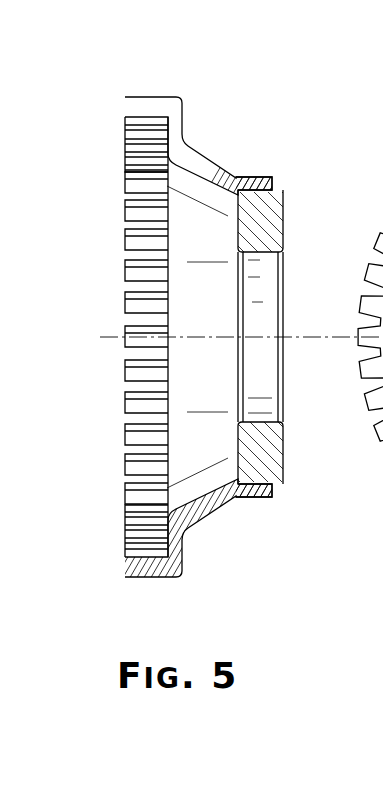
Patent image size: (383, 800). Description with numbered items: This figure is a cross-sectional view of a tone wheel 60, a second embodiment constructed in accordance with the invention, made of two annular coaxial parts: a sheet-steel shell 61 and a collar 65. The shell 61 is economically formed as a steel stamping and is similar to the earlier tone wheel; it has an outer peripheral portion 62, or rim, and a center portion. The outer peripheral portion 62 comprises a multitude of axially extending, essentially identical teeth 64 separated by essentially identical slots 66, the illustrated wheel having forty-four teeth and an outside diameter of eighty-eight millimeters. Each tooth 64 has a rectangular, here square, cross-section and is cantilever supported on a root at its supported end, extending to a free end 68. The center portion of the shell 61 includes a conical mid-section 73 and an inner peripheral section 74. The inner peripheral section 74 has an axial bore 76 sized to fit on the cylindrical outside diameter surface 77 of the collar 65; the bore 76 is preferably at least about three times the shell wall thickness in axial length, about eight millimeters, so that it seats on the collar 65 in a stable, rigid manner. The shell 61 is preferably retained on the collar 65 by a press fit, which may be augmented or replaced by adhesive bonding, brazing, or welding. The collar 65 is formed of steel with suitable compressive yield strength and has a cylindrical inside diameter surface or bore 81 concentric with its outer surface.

The tone wheel 60 is at (129, 81).
The shell part 61 is at (205, 152).
The outer peripheral portion 62 is at (122, 105).
The teeth 64 is at (137, 407).
The collar 65 is at (289, 457).
The slots 66 is at (137, 502).
The free end 68 is at (125, 268).
The conical mid-section 73 is at (203, 518).
The inner peripheral section 74 is at (257, 500).
The axial bore 76 is at (268, 194).
The cylindrical outside diameter surface 77 is at (281, 189).
The bore 81 is at (259, 253).